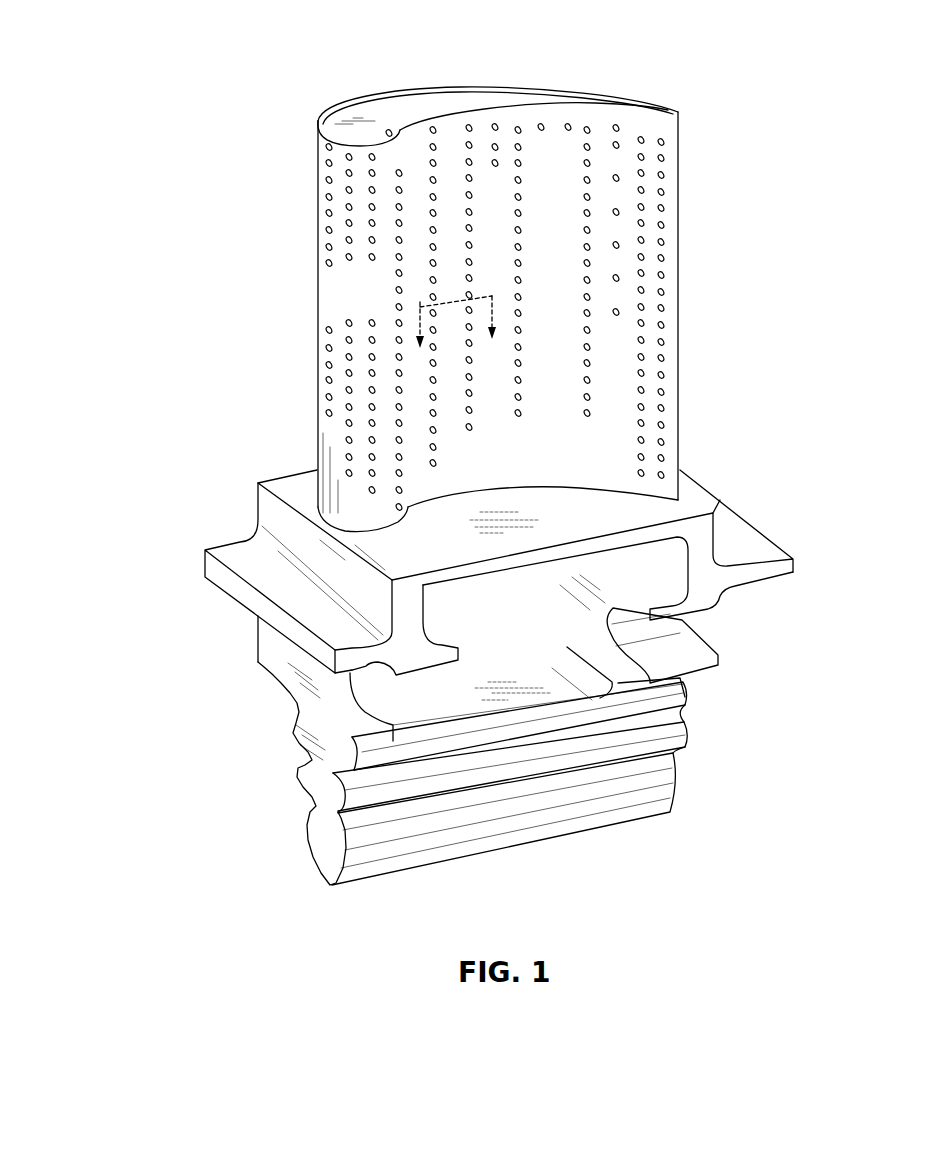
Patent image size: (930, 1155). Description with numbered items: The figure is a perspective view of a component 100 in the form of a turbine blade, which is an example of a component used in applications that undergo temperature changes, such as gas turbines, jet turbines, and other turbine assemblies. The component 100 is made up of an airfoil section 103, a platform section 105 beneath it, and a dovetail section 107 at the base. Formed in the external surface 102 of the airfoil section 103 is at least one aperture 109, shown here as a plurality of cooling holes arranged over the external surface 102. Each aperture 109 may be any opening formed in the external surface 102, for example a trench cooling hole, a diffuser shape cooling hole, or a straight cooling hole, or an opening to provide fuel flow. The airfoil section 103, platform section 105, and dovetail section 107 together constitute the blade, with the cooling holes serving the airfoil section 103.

The component 100 is at (290, 78).
The external surface 102 is at (660, 123).
The airfoil section 103 is at (180, 470).
The platform section 105 is at (180, 487).
The dovetail section 107 is at (180, 578).
The aperture 109 is at (329, 263).